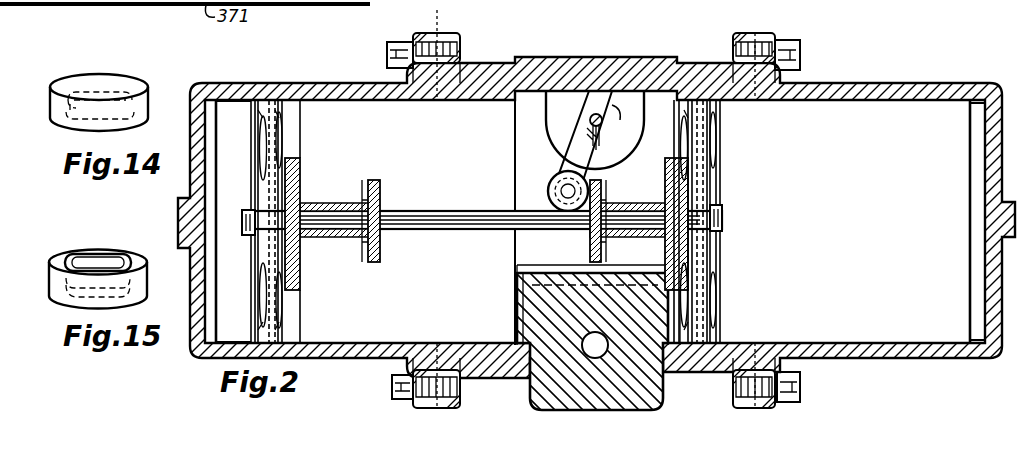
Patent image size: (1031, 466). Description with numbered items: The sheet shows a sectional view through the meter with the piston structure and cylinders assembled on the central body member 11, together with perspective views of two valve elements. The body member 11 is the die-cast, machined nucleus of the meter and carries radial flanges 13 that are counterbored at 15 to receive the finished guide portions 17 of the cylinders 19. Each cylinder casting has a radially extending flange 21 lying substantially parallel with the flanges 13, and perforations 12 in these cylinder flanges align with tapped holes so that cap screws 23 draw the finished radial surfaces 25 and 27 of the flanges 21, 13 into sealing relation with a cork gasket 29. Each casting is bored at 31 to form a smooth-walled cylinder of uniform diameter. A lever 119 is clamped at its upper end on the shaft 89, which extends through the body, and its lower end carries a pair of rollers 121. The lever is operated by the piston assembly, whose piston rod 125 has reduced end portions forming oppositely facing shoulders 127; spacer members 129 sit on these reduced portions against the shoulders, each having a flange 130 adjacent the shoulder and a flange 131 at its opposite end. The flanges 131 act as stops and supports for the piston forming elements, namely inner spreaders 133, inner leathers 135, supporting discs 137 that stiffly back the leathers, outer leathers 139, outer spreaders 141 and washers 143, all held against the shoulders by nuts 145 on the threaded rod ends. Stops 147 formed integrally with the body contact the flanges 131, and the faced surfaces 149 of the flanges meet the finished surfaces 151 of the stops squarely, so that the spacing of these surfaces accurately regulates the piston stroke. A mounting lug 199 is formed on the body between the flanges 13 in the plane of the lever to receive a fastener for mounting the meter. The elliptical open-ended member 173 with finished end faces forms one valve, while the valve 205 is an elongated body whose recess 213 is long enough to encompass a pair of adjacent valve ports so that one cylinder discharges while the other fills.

In FIG. 2, the central body member 11 is at (520, 58).
In FIG. 2, the perforations 12 is at (410, 408).
In FIG. 2, the radial flanges 13 is at (460, 45).
In FIG. 2, the counterbore 15 is at (455, 84).
In FIG. 2, the guide portions 17 is at (735, 62).
In FIG. 2, the cylinders 19 is at (330, 84).
In FIG. 2, the flanges 21 is at (762, 34).
In FIG. 2, the cap screws 23 is at (392, 52).
In FIG. 2, the finished radial surface 25 is at (758, 410).
In FIG. 2, the finished radial surface 27 is at (750, 408).
In FIG. 2, the gasket 29 is at (437, 10).
In FIG. 2, the bore 31 is at (232, 100).
In FIG. 2, the shaft 89 is at (590, 120).
In FIG. 2, the lever 119 is at (596, 156).
In FIG. 2, the rollers 121 is at (552, 184).
In FIG. 2, the piston rod 125 is at (440, 211).
In FIG. 2, the shoulders 127 is at (596, 206).
In FIG. 2, the spacer members 129 is at (372, 188).
In FIG. 2, the flange 130 is at (386, 206).
In FIG. 2, the flanges 131 is at (296, 170).
In FIG. 2, the inner spreaders 133 is at (282, 150).
In FIG. 2, the inner leathers 135 is at (272, 110).
In FIG. 2, the spacer or supporting discs 137 is at (290, 292).
In FIG. 2, the outer leathers 139 is at (290, 308).
In FIG. 2, the outer spreaders 141 is at (290, 322).
In FIG. 2, the washers 143 is at (262, 242).
In FIG. 2, the nuts 145 is at (245, 212).
In FIG. 2, the stops 147 is at (518, 264).
In FIG. 2, the finished surface 149 is at (290, 274).
In FIG. 2, the finished surfaces 151 is at (520, 286).
In FIG. 15, the elliptical open ended member 173 is at (90, 254).
In FIG. 2, the mounting lug 199 is at (620, 418).
In FIG. 14, the valve 205 is at (92, 78).
In FIG. 14, the valve recess 213 is at (54, 120).